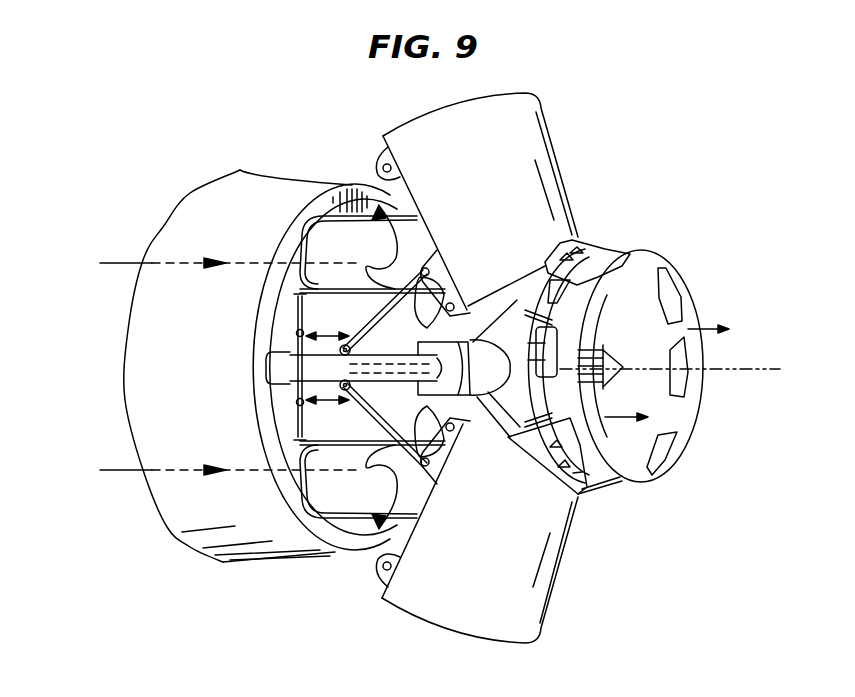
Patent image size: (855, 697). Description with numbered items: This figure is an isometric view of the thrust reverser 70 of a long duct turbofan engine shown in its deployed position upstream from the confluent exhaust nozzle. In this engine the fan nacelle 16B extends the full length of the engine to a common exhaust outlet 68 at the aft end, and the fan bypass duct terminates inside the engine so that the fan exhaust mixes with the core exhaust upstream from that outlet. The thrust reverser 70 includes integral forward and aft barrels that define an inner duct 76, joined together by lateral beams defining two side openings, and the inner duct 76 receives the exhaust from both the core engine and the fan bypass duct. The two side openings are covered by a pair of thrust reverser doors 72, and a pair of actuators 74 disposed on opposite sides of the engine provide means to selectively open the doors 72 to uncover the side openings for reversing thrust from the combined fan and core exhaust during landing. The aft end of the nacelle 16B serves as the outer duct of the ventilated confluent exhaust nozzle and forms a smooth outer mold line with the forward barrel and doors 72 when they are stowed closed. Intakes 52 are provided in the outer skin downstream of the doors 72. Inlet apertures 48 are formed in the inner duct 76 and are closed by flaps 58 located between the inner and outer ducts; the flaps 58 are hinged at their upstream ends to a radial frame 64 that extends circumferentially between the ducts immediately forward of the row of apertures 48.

The fan nacelle 16B is at (262, 560).
The thrust reverser 70 is at (330, 131).
The thrust reverser doors 72 is at (500, 207).
The actuators 74 is at (290, 368).
The intakes 52 is at (585, 240).
The inlet apertures 48 is at (673, 293).
The flaps 58 is at (548, 337).
The radial frame 64 is at (510, 437).
The common exhaust outlet 68 is at (683, 437).
The inner duct 76 is at (624, 460).